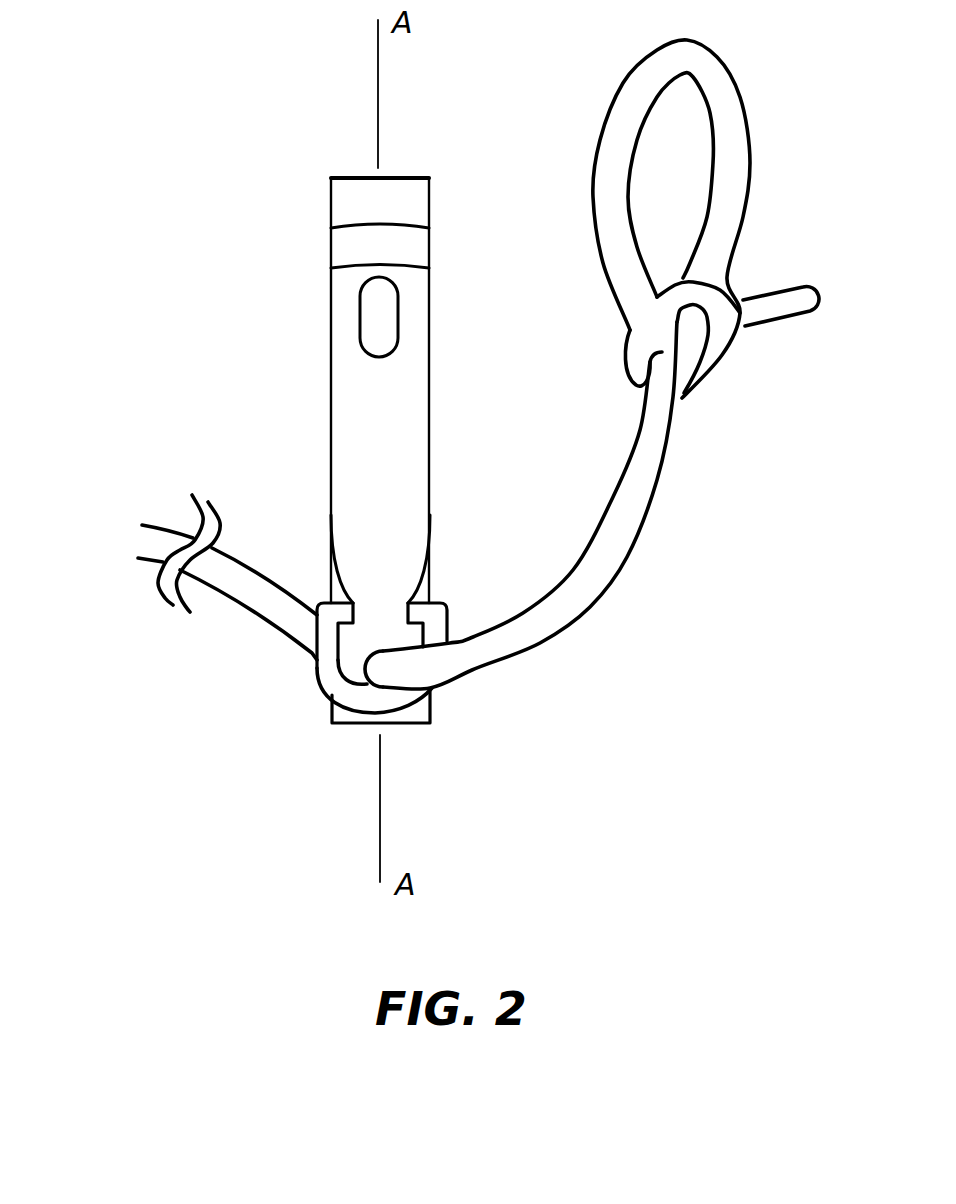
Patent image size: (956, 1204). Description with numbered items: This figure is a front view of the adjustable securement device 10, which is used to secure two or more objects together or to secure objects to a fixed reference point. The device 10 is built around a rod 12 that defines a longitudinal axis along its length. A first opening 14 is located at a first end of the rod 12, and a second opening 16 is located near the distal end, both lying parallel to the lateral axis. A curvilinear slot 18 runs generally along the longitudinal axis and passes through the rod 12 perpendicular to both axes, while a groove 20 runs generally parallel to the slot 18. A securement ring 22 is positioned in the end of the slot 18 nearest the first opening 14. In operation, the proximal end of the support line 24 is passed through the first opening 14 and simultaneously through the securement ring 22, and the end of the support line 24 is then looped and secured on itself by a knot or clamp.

The adjustable securement device 10 is at (178, 216).
The rod 12 is at (352, 425).
The first opening 14 is at (362, 667).
The second opening 16 is at (382, 318).
The curvilinear slot 18 is at (417, 590).
The groove 20 is at (395, 248).
The securement ring 22 is at (393, 697).
The support line 24 is at (635, 485).